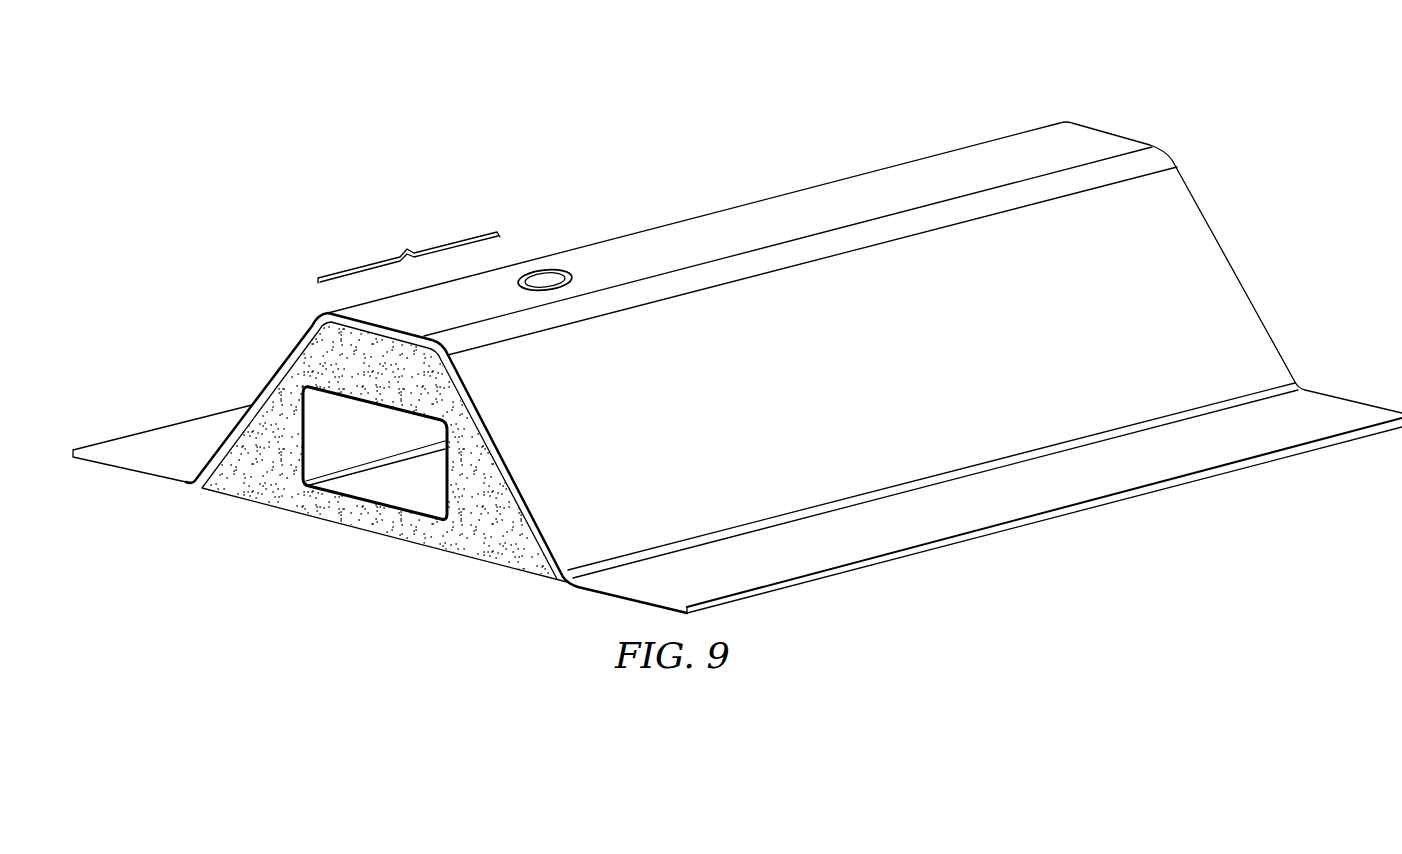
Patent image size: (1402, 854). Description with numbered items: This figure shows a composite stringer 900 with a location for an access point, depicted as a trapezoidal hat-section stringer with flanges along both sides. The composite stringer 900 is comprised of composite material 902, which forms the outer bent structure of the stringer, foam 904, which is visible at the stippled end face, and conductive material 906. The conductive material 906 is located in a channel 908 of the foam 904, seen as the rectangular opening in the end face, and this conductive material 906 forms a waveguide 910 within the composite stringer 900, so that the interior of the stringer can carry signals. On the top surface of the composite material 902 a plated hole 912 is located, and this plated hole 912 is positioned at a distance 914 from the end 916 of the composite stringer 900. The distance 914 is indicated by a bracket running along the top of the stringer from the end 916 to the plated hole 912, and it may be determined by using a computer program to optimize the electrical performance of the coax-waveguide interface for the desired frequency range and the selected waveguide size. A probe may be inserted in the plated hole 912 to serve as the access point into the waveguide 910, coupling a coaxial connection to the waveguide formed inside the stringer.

The composite stringer 900 is at (462, 95).
The composite material 902 is at (690, 237).
The foam 904 is at (492, 550).
The conductive material 906 is at (390, 493).
The channel 908 is at (424, 494).
The waveguide 910 is at (286, 467).
The plated hole 912 is at (545, 275).
The distance 914 is at (409, 251).
The end 916 is at (353, 316).